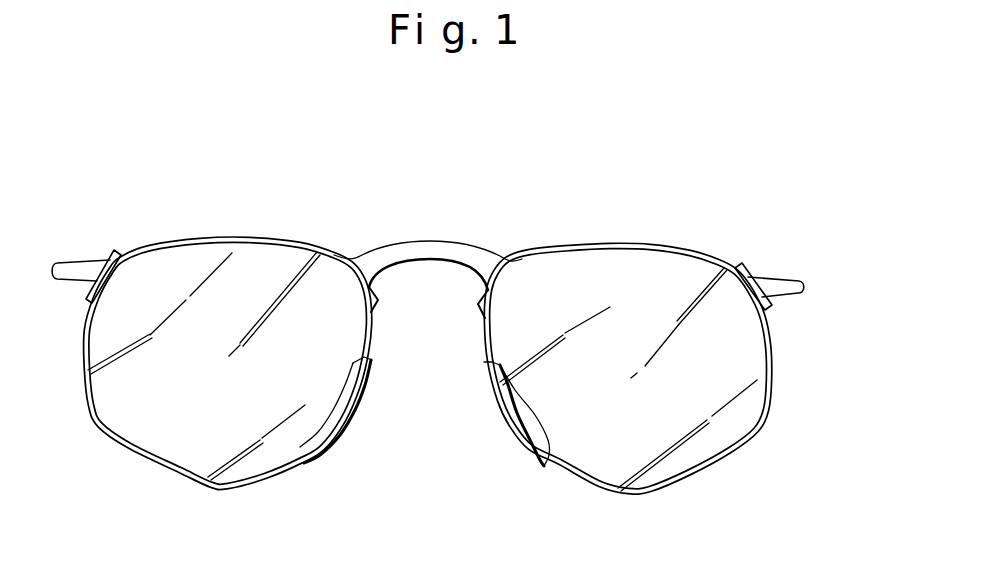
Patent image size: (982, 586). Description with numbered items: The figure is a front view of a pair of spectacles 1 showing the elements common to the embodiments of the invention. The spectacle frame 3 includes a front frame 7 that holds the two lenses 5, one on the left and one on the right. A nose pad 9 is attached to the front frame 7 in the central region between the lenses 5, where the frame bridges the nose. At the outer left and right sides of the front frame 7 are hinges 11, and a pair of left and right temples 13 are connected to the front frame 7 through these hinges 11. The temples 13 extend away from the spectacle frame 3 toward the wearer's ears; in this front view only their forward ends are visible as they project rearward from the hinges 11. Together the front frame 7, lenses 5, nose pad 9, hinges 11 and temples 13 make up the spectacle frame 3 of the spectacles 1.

The pair of spectacles 1 is at (551, 211).
The spectacle frame 3 is at (433, 241).
The lenses 5 is at (238, 452).
The front frame 7 is at (274, 477).
The nose pad 9 is at (497, 403).
The hinges 11 is at (111, 255).
The temples 13 is at (63, 260).